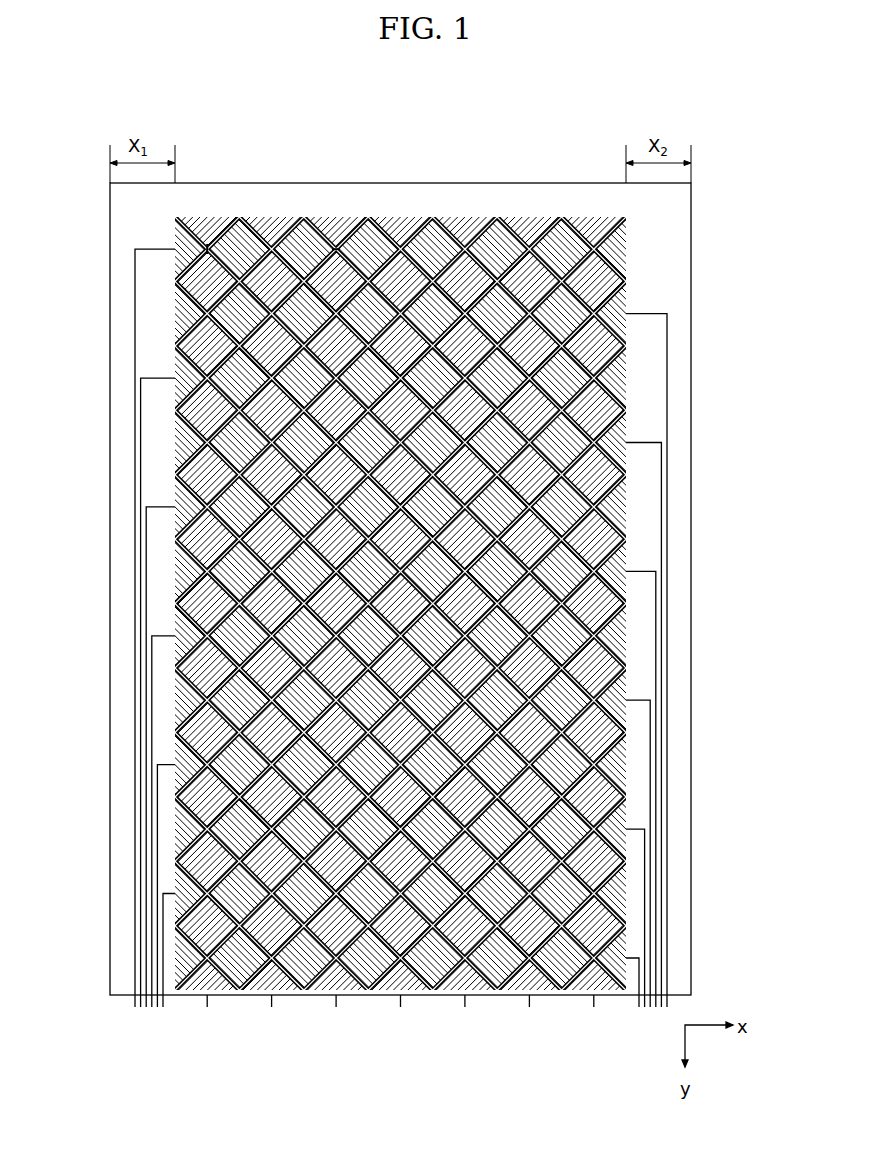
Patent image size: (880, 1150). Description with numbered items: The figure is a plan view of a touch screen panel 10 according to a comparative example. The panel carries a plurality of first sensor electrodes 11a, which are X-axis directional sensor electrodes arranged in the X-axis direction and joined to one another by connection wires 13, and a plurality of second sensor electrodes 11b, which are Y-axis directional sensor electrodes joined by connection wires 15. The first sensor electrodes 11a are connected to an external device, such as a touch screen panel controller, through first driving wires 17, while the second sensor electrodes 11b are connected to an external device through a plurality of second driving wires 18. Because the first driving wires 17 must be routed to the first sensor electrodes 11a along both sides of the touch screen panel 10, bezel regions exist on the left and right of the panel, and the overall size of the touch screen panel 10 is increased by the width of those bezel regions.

The touch screen panel 10 is at (512, 183).
The first sensor electrodes 11a is at (300, 230).
The second sensor electrodes 11b is at (200, 222).
The connection wires 13 is at (335, 225).
The connection wires 15 is at (226, 243).
The first driving wires 17 is at (135, 303).
The second driving wires 18 is at (400, 1003).